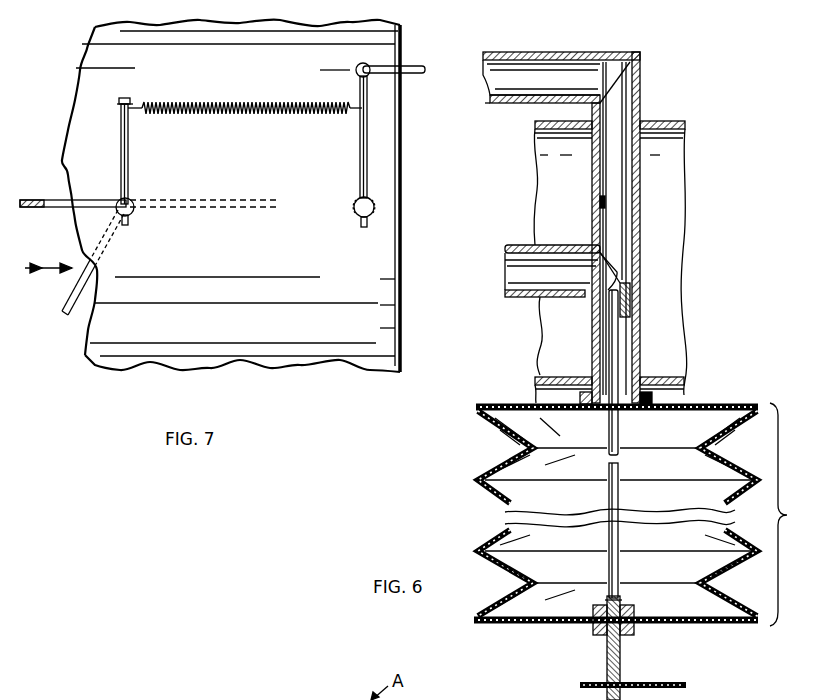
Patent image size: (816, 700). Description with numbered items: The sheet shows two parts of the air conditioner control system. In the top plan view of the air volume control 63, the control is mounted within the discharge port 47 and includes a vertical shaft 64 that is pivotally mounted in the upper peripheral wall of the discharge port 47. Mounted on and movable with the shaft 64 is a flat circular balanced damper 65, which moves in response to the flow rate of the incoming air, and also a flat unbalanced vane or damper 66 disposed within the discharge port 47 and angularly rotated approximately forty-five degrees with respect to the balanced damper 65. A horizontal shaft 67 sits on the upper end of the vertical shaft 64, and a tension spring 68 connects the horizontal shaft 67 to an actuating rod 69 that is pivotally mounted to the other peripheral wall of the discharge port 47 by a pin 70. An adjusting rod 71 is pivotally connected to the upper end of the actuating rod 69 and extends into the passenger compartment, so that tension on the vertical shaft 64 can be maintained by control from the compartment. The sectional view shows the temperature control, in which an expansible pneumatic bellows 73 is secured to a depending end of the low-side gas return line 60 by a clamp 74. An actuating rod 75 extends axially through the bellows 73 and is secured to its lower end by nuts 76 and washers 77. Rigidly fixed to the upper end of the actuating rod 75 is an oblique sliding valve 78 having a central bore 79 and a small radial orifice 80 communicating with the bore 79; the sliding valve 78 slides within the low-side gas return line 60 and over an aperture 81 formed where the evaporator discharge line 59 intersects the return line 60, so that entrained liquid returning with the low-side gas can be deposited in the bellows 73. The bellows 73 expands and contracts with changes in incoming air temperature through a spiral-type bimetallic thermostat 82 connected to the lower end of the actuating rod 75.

In FIG. 7, the discharge port 47 is at (403, 190).
In FIG. 6, the evaporator discharge line 59 is at (512, 277).
In FIG. 6, the low-side gas return line 60 is at (580, 52).
In FIG. 7, the air volume control 63 is at (53, 196).
In FIG. 7, the vertical shaft 64 is at (130, 200).
In FIG. 7, the flat circular balanced damper 65 is at (60, 210).
In FIG. 7, the flat unbalanced vane or damper 66 is at (66, 312).
In FIG. 7, the horizontal shaft 67 is at (121, 148).
In FIG. 7, the tension spring 68 is at (210, 100).
In FIG. 7, the actuating rod 69 is at (368, 140).
In FIG. 7, the pin 70 is at (375, 207).
In FIG. 7, the adjusting rod 71 is at (425, 66).
In FIG. 6, the expansible pneumatic bellows 73 is at (500, 432).
In FIG. 6, the clamp 74 is at (652, 398).
In FIG. 6, the actuating rod 75 is at (620, 365).
In FIG. 6, the nuts 76 is at (595, 632).
In FIG. 6, the washers 77 is at (634, 612).
In FIG. 6, the oblique sliding valve 78 is at (636, 232).
In FIG. 6, the central bore 79 is at (603, 212).
In FIG. 6, the small radial orifice 80 is at (603, 190).
In FIG. 6, the aperture 81 is at (598, 272).
In FIG. 6, the spiral-type bimetallic thermostat 82 is at (675, 683).